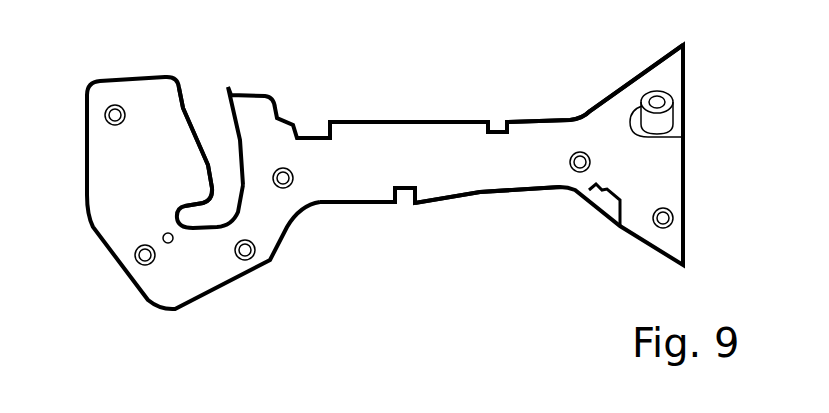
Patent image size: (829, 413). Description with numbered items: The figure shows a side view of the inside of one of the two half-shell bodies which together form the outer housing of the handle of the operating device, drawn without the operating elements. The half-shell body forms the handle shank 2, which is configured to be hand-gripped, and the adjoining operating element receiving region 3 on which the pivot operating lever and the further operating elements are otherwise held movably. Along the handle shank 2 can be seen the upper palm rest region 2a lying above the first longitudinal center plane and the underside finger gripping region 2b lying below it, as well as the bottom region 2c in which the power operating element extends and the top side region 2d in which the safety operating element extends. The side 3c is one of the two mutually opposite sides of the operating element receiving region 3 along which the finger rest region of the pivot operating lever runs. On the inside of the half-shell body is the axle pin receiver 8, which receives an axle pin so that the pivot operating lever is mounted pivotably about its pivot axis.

The handle shank 2 is at (555, 175).
The upper palm rest region 2a is at (537, 130).
The underside finger gripping region 2b is at (480, 183).
The bottom region 2c is at (375, 188).
The top side region 2d is at (403, 132).
The operating element receiving region 3 is at (138, 113).
The side of the operating element receiving region 3c is at (183, 108).
The axle pin receiver 8 is at (162, 237).